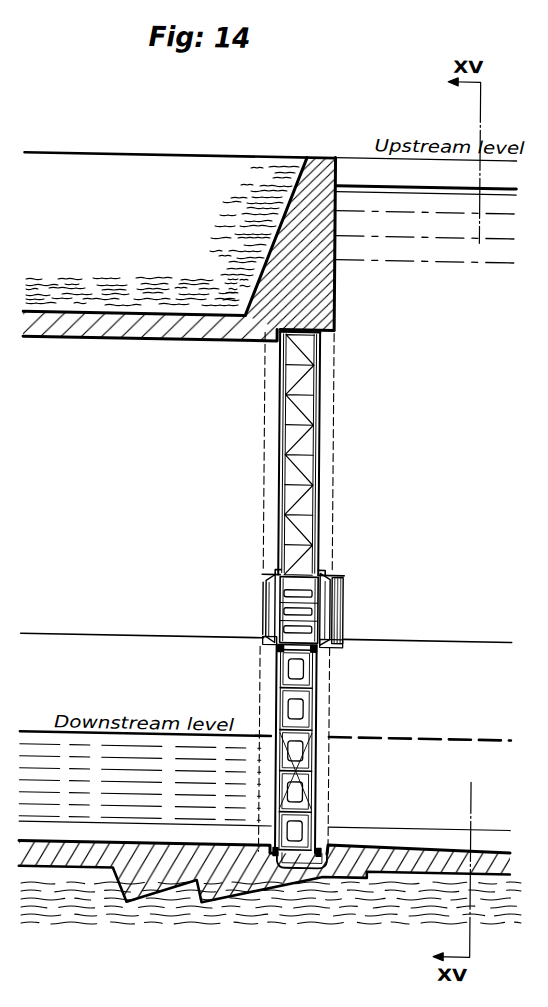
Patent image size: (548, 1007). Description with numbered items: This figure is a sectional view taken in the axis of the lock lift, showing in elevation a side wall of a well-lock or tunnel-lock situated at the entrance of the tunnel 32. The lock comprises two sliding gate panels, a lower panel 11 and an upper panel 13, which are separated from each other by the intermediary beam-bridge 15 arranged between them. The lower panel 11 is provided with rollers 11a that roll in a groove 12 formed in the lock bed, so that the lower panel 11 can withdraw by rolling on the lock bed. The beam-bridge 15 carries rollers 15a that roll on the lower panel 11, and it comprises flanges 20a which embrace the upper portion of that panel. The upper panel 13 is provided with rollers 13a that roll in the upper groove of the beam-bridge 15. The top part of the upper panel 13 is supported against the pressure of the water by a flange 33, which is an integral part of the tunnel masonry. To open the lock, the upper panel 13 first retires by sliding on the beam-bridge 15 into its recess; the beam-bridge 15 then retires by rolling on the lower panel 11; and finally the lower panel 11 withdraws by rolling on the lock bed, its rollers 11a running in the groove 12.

The tunnel 32 is at (101, 340).
The flange 33 is at (279, 330).
The upper panel 13 is at (304, 392).
The rollers 13a is at (276, 575).
The beam-bridge 15 is at (315, 597).
The rollers 15a is at (278, 652).
The flanges 20a is at (265, 641).
The lower panel 11 is at (301, 716).
The rollers 11a is at (270, 859).
The groove 12 is at (300, 869).